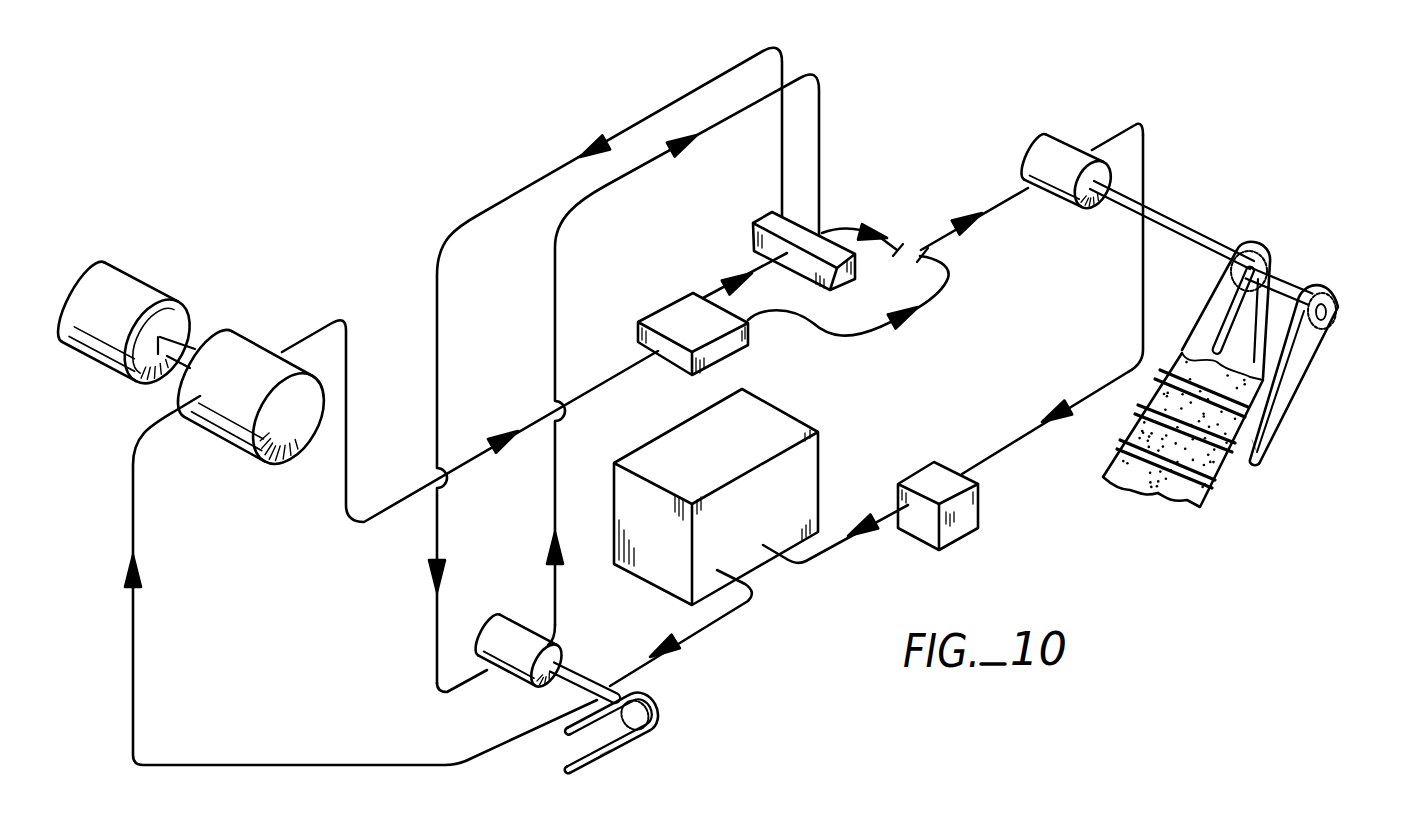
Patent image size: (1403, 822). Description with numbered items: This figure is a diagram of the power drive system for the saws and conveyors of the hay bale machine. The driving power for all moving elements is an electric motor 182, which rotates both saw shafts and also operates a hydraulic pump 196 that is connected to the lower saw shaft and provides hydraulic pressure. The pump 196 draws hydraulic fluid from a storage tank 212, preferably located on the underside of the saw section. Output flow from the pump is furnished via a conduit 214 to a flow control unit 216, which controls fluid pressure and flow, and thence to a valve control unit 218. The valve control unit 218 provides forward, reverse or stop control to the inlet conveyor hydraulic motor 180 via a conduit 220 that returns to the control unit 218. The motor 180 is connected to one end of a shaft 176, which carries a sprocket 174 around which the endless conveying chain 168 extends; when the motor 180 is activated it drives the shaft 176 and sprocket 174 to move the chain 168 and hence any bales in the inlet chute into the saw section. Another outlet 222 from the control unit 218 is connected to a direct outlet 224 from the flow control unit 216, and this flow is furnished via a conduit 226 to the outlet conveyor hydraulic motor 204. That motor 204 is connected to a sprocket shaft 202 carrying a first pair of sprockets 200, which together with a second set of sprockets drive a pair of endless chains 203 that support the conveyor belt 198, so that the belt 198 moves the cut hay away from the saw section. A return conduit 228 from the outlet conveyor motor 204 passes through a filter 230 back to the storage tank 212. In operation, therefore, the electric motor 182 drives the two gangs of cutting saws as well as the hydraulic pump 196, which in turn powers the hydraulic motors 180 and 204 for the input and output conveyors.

The endless conveying chain 168 is at (625, 753).
The sprocket 174 is at (652, 698).
The shaft 176 is at (572, 670).
The hydraulic motor 180 is at (513, 630).
The electric motor 182 is at (140, 292).
The hydraulic pump 196 is at (240, 350).
The conveyor belt 198 is at (1205, 463).
The first pair of sprockets 200 is at (1337, 290).
The shaft 202 is at (1160, 213).
The endless chains 203 is at (1252, 453).
The hydraulic motor 204 is at (1053, 143).
The storage tank 212 is at (767, 430).
The conduit 214 is at (380, 522).
The flow control unit 216 is at (680, 320).
The valve control unit 218 is at (770, 217).
The conduit 220 is at (640, 123).
The outlet 222 is at (882, 332).
The direct outlet 224 is at (847, 228).
The conduit 226 is at (999, 197).
The return conduit 228 is at (1143, 277).
The filter 230 is at (957, 537).